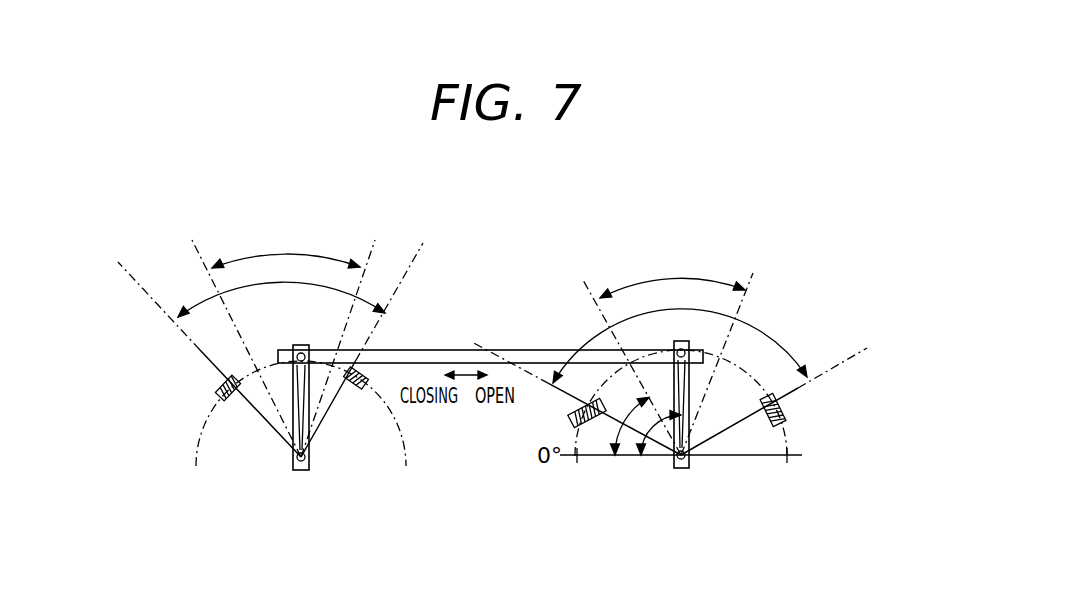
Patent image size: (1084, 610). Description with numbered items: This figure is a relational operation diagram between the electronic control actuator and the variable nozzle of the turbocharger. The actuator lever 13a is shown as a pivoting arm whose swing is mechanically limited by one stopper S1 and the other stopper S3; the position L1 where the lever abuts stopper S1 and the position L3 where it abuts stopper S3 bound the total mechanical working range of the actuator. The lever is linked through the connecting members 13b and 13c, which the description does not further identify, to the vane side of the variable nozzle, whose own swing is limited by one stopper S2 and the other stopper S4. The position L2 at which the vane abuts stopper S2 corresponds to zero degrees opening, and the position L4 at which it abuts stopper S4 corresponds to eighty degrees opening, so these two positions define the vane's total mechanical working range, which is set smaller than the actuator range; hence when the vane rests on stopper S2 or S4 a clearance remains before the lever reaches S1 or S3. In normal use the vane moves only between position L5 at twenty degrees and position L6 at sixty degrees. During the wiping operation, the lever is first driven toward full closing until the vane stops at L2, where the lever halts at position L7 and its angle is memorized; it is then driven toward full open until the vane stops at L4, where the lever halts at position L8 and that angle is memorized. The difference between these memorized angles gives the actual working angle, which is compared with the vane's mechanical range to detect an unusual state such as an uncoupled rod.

The lever 13a is at (690, 437).
The connecting bar 13b is at (413, 357).
The left pivot arm 13c is at (265, 462).
The one stopper S1 is at (565, 400).
The one stopper S2 is at (210, 386).
The other stopper S3 is at (790, 405).
The other stopper S4 is at (357, 392).
The position L1 is at (568, 385).
The position L2 is at (200, 346).
The position L3 is at (791, 392).
The position L4 is at (374, 342).
The position L5 is at (239, 336).
The position L6 is at (344, 336).
The position L7 is at (624, 352).
The position L8 is at (728, 352).